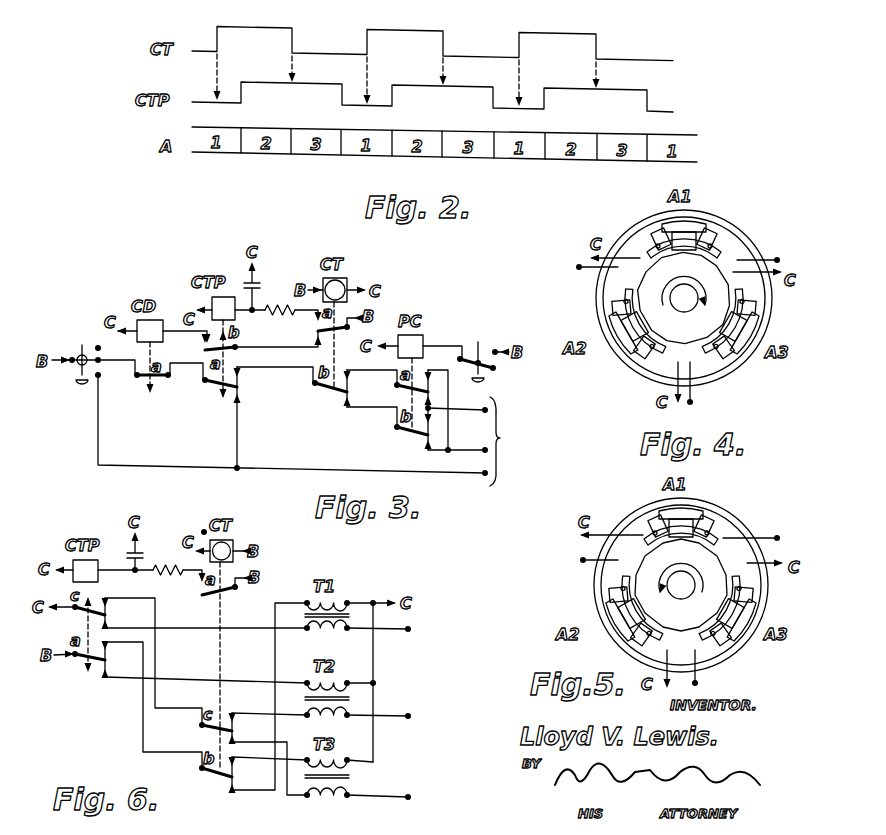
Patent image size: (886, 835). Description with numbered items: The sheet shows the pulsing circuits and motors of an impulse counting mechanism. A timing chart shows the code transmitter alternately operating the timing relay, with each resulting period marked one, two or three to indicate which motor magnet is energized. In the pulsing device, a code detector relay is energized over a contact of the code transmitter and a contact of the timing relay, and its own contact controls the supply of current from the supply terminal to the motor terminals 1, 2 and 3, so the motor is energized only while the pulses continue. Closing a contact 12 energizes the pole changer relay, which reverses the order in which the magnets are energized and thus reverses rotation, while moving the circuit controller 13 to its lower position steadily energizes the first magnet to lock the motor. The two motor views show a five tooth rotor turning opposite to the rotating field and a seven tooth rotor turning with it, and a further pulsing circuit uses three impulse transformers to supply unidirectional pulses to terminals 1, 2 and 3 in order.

In FIG. 3, the contact 12 is at (476, 351).
In FIG. 3, the circuit controller 13 is at (76, 356).
In FIG. 3, the motor terminal 1 is at (482, 463).
In FIG. 6, the motor terminal 1 is at (386, 632).
In FIG. 4, the motor terminal 1 is at (767, 253).
In FIG. 5, the motor terminal 1 is at (759, 532).
In FIG. 3, the motor terminal 2 is at (458, 400).
In FIG. 6, the motor terminal 2 is at (386, 718).
In FIG. 4, the motor terminal 2 is at (593, 278).
In FIG. 5, the motor terminal 2 is at (589, 560).
In FIG. 3, the motor terminal 3 is at (458, 439).
In FIG. 6, the motor terminal 3 is at (386, 799).
In FIG. 4, the motor terminal 3 is at (697, 387).
In FIG. 5, the motor terminal 3 is at (703, 672).